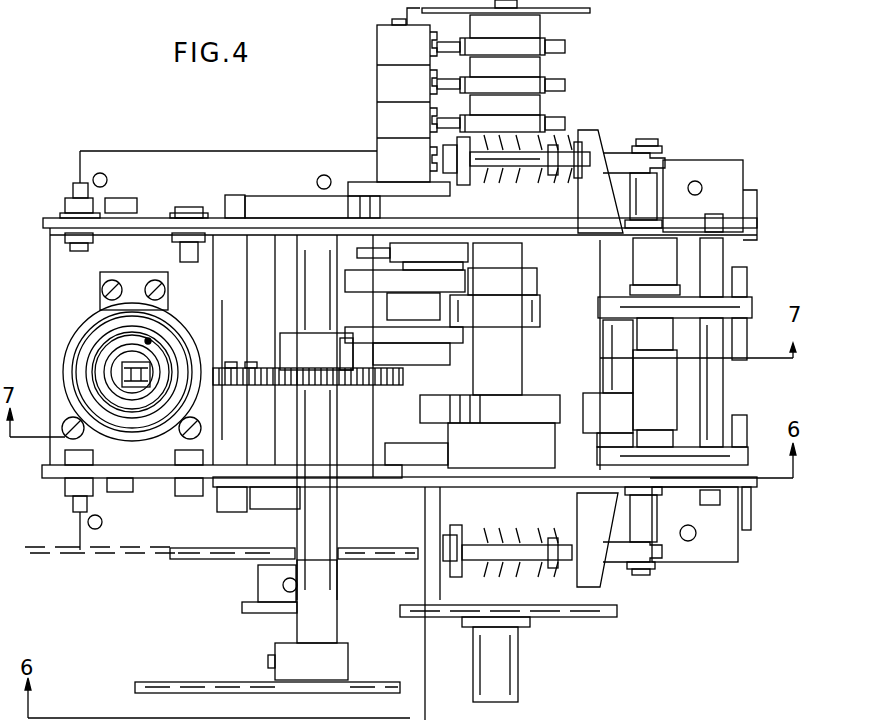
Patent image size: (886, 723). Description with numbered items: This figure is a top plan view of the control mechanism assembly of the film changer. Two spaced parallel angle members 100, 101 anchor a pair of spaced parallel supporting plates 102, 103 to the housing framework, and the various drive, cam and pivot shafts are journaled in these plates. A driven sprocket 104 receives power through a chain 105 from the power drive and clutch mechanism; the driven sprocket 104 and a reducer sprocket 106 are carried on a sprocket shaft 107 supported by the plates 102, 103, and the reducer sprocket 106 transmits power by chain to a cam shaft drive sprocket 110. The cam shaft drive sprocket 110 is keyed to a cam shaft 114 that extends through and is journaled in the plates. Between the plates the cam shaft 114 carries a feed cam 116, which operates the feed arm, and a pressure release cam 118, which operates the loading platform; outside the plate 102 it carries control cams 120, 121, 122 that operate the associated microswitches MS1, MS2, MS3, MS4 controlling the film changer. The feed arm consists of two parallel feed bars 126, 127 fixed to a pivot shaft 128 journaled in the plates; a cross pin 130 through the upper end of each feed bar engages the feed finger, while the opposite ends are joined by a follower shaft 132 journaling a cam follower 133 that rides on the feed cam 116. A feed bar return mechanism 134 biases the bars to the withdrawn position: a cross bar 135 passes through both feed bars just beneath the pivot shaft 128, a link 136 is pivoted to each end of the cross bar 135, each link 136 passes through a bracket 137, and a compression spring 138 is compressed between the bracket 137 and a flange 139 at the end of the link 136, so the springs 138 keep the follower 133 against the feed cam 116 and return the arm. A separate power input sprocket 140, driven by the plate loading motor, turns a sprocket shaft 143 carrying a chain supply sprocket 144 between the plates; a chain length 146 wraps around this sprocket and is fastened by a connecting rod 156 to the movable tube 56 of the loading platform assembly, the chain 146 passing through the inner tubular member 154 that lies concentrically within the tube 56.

The microswitch MS1 is at (408, 45).
The microswitch MS2 is at (408, 83).
The microswitch MS3 is at (408, 121).
The microswitch MS4 is at (408, 160).
The control cam 120 is at (565, 47).
The control cam 121 is at (565, 85).
The control cam 122 is at (565, 126).
The flange 139 is at (464, 185).
The compression spring 138 is at (512, 186).
The bracket 137 is at (617, 521).
The link 136 is at (612, 153).
The feed bar return mechanism 134 is at (660, 141).
The cross bar 135 is at (657, 187).
The angle member 100 is at (735, 175).
The supporting plate 102 is at (757, 240).
The movable tube 56 is at (100, 328).
The connecting rod 156 is at (105, 358).
The inner tubular member 154 is at (120, 374).
The chain length 146 is at (235, 366).
The chain supply sprocket 144 is at (316, 351).
The sprocket shaft 107 is at (290, 408).
The pressure release cam 118 is at (540, 307).
The follower shaft 132 is at (612, 333).
The feed cam 116 is at (560, 393).
The cam follower 133 is at (600, 430).
The pivot shaft 128 is at (677, 378).
The feed bar 126 is at (745, 292).
The cross pin 130 is at (747, 340).
The feed bar 127 is at (740, 457).
The angle member 101 is at (715, 550).
The supporting plate 103 is at (688, 490).
The cam shaft drive sprocket 110 is at (580, 617).
The cam shaft 114 is at (515, 665).
The driven sprocket 104 is at (200, 559).
The chain 105 is at (55, 553).
The reducer sprocket 106 is at (258, 613).
The sprocket shaft 143 is at (328, 628).
The power input sprocket 140 is at (350, 693).